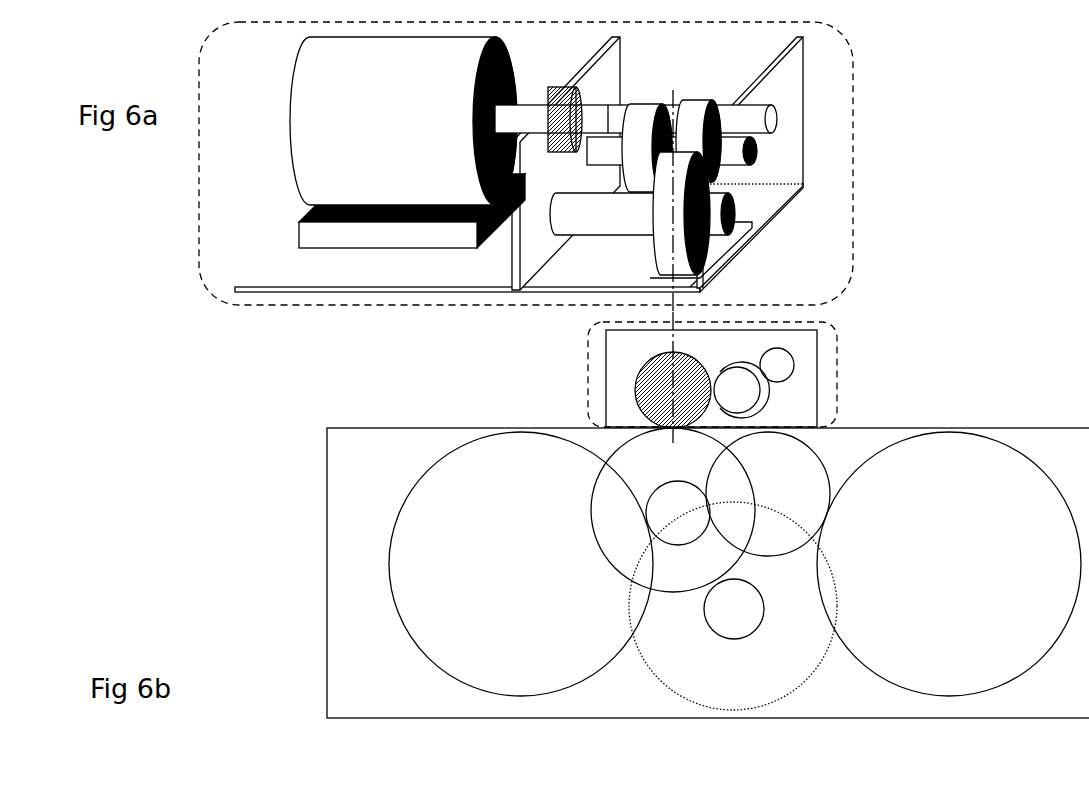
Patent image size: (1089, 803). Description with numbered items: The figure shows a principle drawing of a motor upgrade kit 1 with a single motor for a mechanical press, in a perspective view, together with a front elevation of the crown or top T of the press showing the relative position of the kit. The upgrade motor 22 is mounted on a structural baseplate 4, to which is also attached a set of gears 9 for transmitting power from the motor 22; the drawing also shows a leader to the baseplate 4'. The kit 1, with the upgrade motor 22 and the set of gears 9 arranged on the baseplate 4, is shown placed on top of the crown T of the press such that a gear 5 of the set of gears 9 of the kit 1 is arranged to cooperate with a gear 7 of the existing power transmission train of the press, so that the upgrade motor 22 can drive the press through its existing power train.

In FIG. 6a, the upgrade kit 1 is at (526, 163).
In FIG. 6b, the upgrade kit 1 is at (712, 374).
In FIG. 6a, the structural baseplate 4 is at (775, 163).
In FIG. 6b, the structural baseplate 4 is at (776, 378).
In FIG. 6a, the base plate 4' is at (421, 270).
In FIG. 6a, the gear 5 is at (645, 247).
In FIG. 6b, the gear 5 is at (625, 379).
In FIG. 6b, the gear 7 is at (700, 455).
In FIG. 6a, the set of gears 9 is at (692, 186).
In FIG. 6a, the upgrade motor 22 is at (333, 148).
In FIG. 6b, the crown or top T is at (365, 628).